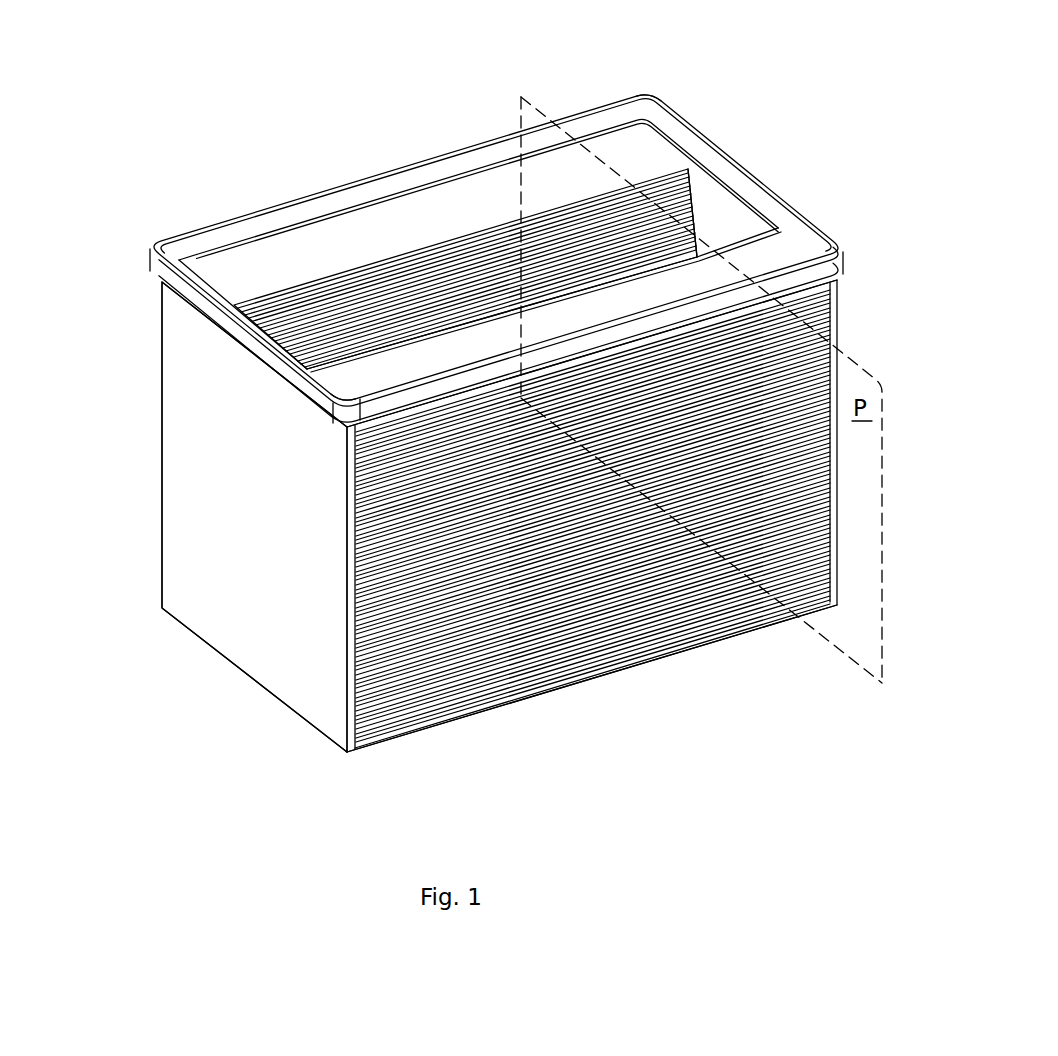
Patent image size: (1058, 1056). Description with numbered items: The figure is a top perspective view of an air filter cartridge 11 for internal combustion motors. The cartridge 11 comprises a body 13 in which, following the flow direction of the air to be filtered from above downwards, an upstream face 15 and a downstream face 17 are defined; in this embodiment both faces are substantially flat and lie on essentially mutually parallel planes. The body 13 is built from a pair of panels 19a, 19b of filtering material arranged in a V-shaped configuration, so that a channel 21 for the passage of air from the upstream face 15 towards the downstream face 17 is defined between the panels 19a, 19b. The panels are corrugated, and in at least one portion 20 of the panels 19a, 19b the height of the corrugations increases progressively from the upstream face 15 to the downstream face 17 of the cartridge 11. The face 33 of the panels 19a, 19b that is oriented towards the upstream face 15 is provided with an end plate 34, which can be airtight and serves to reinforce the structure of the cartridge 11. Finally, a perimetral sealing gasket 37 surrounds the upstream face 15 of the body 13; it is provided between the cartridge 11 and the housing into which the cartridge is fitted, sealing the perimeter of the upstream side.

The air filter cartridge 11 is at (180, 692).
The body 13 is at (415, 695).
The upstream face 15 is at (713, 222).
The downstream face 17 is at (690, 657).
The panel of filtering material 19a is at (393, 290).
The panel of filtering material 19b is at (377, 345).
The portion of the panels 20 is at (246, 513).
The channel 21 is at (465, 231).
The face of the panels 33 is at (283, 262).
The end plate 34 is at (623, 153).
The perimetral sealing gasket 37 is at (150, 292).